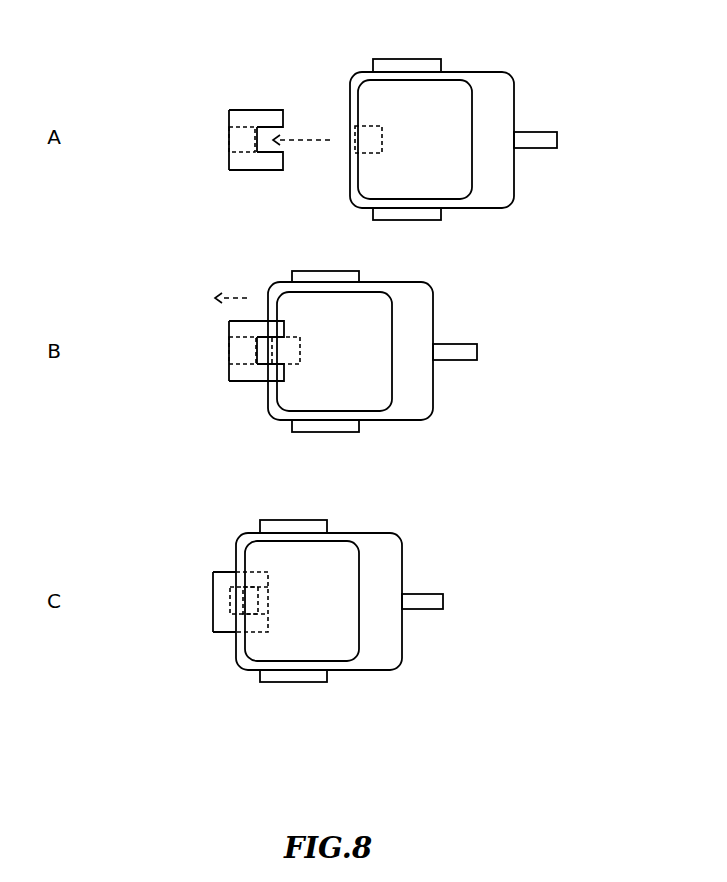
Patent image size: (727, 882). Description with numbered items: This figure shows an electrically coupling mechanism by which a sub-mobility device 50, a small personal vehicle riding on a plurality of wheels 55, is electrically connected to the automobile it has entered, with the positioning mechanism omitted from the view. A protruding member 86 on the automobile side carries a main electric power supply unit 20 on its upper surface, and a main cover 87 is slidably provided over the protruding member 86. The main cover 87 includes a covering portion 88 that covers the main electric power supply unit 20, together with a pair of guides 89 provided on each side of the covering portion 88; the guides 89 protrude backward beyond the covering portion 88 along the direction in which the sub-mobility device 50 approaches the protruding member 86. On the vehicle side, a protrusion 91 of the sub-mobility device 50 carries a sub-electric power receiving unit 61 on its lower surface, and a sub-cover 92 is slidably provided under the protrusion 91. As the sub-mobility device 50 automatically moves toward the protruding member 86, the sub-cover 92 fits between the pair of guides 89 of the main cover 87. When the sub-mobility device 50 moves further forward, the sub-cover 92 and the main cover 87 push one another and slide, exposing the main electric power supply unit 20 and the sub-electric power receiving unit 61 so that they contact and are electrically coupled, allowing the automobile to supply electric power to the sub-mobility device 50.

The sub-mobility device 50 is at (488, 73).
The wheels 55 is at (397, 61).
The main cover 87 is at (193, 369).
The covering portion 88 is at (228, 136).
The guides 89 is at (228, 113).
The protrusion 91 is at (382, 143).
The sub-cover 92 is at (268, 596).
The protruding member 86 is at (198, 637).
The main electric power supply unit 20 is at (198, 637).
The sub-electric power receiving unit 61 is at (245, 590).